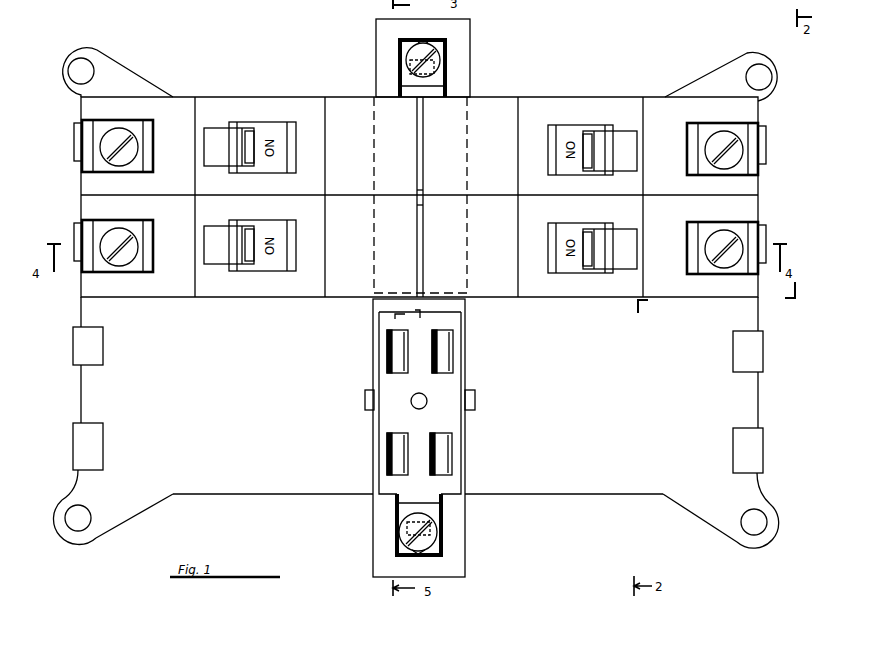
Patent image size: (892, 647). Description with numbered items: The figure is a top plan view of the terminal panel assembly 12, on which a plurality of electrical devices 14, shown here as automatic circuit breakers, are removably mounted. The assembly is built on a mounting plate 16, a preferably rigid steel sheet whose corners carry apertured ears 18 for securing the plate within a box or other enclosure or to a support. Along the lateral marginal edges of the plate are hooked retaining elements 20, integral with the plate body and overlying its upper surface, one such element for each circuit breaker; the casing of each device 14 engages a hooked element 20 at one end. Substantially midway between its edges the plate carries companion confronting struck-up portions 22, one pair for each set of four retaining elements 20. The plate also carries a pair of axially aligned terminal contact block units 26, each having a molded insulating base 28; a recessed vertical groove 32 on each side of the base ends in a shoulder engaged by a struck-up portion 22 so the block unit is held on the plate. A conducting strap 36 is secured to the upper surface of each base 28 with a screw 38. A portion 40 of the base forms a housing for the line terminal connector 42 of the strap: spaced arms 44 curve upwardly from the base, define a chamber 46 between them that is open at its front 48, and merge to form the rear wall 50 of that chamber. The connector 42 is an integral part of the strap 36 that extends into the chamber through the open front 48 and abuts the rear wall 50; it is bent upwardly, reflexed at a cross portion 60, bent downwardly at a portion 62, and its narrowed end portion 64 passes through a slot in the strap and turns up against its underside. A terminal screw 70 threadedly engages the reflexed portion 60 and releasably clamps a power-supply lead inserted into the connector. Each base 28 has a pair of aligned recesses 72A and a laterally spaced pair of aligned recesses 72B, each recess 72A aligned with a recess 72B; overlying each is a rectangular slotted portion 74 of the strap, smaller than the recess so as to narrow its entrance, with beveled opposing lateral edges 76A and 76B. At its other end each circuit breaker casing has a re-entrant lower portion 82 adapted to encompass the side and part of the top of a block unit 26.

The terminal panel assembly 12 is at (598, 81).
The electrical devices 14 is at (282, 95).
The mounting plate 16 is at (265, 500).
The apertured ears 18 is at (92, 52).
The hooked retaining elements 20 is at (74, 146).
The struck-up portions 22 is at (365, 400).
The terminal contact block unit 26 is at (474, 91).
The molded insulating base 28 is at (476, 135).
The vertical groove 32 is at (463, 415).
The conducting strap 36 is at (373, 384).
The screw 38 is at (415, 406).
The housing portion 40 is at (470, 37).
The line terminal connector 42 is at (401, 48).
The spaced arms 44 is at (466, 56).
The chamber 46 is at (426, 41).
The open front 48 is at (432, 96).
The rear wall 50 is at (388, 26).
The reflexed portion 60 is at (438, 518).
The downwardly bent portion 62 is at (400, 89).
The narrowed end portion 64 is at (410, 63).
The terminal screw 70 is at (421, 78).
The recesses 72A is at (395, 350).
The recesses 72B is at (447, 341).
The slotted portion 74 is at (392, 363).
The beveled lateral edge 76A is at (392, 336).
The beveled lateral edge 76B is at (432, 368).
The re-entrant lower portion 82 is at (378, 415).